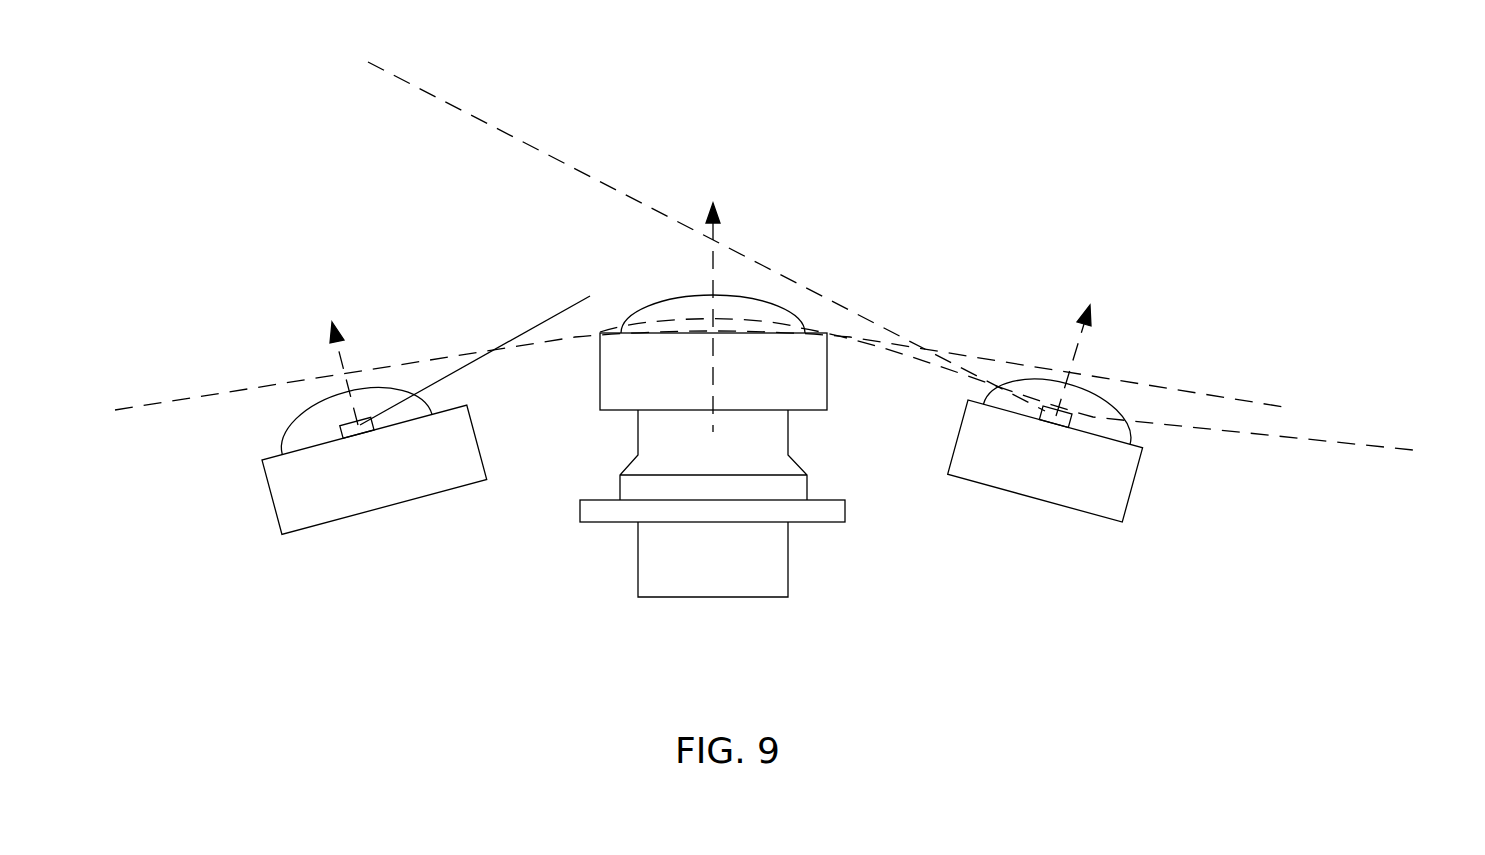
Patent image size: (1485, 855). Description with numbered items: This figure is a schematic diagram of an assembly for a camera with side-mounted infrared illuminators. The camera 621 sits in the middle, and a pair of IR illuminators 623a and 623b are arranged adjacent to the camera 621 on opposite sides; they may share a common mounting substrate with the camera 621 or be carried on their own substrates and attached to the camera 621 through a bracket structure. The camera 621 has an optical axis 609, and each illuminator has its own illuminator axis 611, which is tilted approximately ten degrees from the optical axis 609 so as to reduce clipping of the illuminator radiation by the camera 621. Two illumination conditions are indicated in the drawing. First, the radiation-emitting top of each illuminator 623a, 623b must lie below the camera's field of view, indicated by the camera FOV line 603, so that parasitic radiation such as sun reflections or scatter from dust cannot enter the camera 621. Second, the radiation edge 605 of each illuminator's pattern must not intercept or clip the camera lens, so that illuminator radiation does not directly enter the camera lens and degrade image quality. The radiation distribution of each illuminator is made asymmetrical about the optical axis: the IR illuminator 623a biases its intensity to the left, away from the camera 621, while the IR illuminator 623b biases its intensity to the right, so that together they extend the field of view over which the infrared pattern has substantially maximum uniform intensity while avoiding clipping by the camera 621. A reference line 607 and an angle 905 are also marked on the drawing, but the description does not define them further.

The camera FOV line 603 is at (450, 333).
The radiation edge 605 is at (1348, 420).
The reference plane line 607 is at (378, 215).
The optical axis 609 is at (736, 267).
The illuminator axis 611 is at (320, 362).
The camera 621 is at (767, 598).
The IR illuminator 623a is at (340, 517).
The IR illuminator 623b is at (1062, 505).
The tilt angle 905 is at (592, 155).